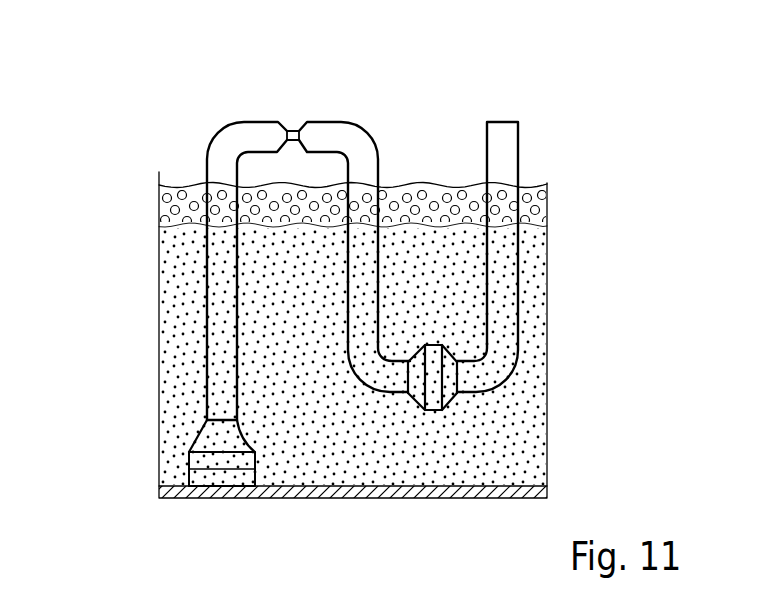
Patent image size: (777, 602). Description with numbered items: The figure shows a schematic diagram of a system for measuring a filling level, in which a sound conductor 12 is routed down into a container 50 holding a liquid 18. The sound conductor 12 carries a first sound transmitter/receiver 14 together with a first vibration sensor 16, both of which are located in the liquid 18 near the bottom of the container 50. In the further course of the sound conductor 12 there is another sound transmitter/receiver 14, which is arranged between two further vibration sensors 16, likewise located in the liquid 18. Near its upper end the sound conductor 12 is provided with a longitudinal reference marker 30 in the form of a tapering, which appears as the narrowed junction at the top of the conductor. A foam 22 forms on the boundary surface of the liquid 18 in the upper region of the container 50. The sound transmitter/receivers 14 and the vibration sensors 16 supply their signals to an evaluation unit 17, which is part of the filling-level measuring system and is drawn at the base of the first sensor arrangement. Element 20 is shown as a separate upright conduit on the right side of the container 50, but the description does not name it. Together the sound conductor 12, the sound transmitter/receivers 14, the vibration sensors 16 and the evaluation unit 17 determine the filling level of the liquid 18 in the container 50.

The sound conductor 12 is at (227, 245).
The sound transmitter/receiver 14 is at (192, 458).
The vibration sensor 16 is at (212, 433).
The evaluation unit 17 is at (197, 477).
The liquid 18 is at (412, 247).
The conduit 20 is at (430, 167).
The foam 22 is at (257, 203).
The longitudinal reference marker 30 is at (295, 131).
The container 50 is at (172, 499).